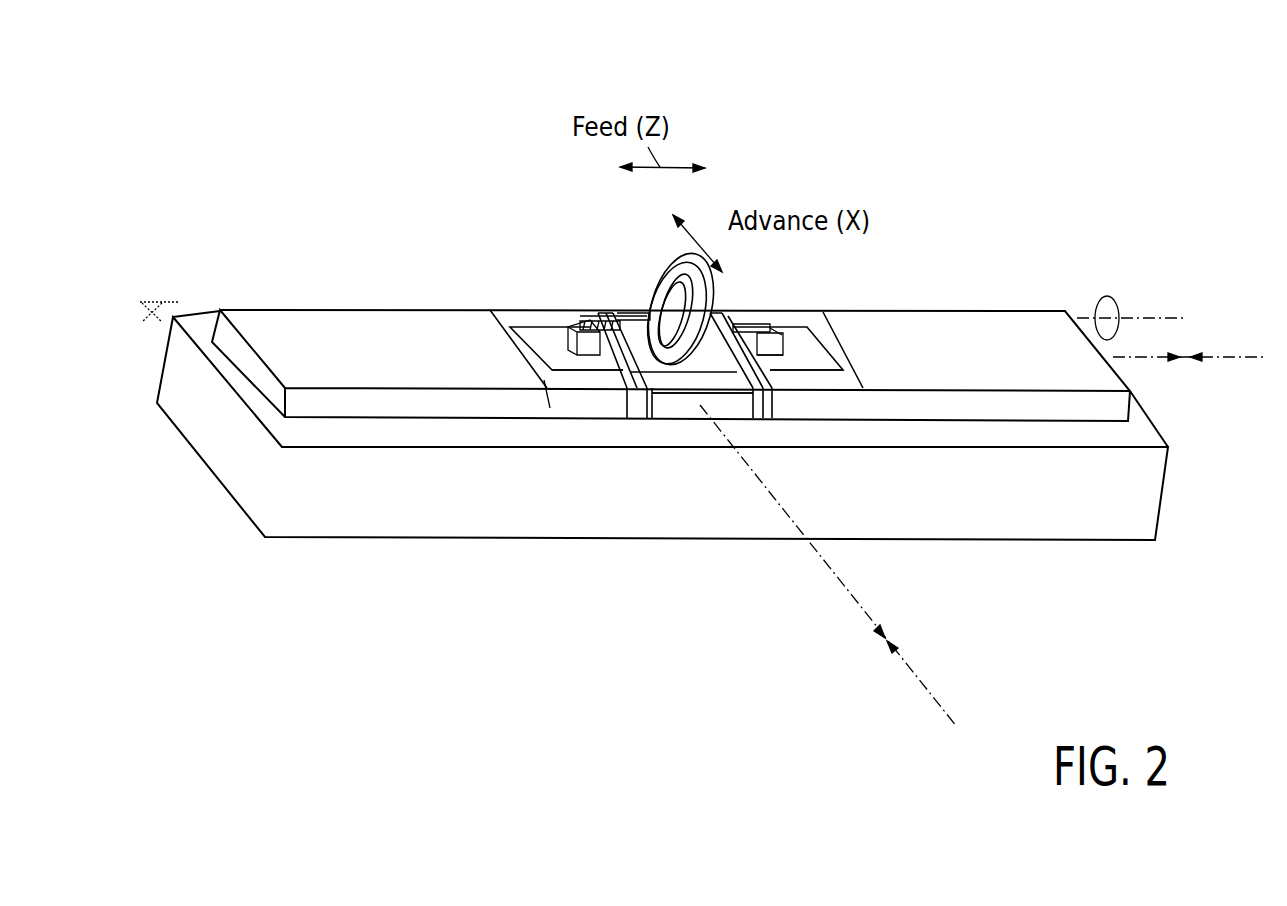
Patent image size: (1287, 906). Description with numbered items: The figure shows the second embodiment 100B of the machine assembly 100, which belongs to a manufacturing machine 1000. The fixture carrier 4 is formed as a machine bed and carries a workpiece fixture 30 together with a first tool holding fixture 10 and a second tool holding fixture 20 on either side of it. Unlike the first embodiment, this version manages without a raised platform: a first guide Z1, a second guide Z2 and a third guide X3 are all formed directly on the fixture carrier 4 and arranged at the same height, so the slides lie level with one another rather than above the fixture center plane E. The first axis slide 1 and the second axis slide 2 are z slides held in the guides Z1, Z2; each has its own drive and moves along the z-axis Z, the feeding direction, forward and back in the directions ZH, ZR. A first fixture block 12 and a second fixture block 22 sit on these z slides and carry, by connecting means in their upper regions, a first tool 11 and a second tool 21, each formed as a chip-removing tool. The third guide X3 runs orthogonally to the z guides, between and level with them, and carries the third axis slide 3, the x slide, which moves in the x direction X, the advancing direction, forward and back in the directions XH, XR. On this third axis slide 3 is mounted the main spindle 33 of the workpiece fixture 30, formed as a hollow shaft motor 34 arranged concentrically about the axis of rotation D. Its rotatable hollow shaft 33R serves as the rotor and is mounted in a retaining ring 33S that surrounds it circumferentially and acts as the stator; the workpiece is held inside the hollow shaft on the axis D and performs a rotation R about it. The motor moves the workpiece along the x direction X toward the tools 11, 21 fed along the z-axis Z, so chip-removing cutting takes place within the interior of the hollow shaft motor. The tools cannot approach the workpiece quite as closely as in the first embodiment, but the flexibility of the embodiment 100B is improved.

The manufacturing machine 1000 is at (295, 60).
The machine assembly 100 is at (372, 167).
The second embodiment of the machine assembly 100B is at (295, 131).
The fixture center plane E is at (152, 312).
The first axis slide 1 is at (473, 398).
The second axis slide 2 is at (875, 406).
The third axis slide 3 is at (658, 420).
The fixture carrier 4 is at (1168, 487).
The first tool holding fixture 10 is at (577, 322).
The first tool 11 is at (582, 326).
The first fixture block 12 is at (545, 403).
The second tool holding fixture 20 is at (773, 328).
The second tool 21 is at (743, 323).
The second fixture block 22 is at (787, 347).
The workpiece fixture 30 is at (620, 317).
The main spindle 33 is at (632, 277).
The hollow shaft 33R is at (660, 268).
The retaining ring 33S is at (667, 263).
The hollow shaft motor 34 is at (750, 197).
The first guide in the z direction Z1 is at (585, 403).
The second guide in the z direction Z2 is at (822, 410).
The third guide in the x direction X3 is at (673, 400).
The rotation R is at (1117, 296).
The axis of rotation D is at (1172, 318).
The z-axis Z is at (1222, 357).
The back direction in the z direction ZR is at (1197, 357).
The forward direction in the z direction ZH is at (1175, 360).
The x-axis X is at (933, 697).
The back direction in the x direction XR is at (877, 633).
The forward direction in the x direction XH is at (892, 650).